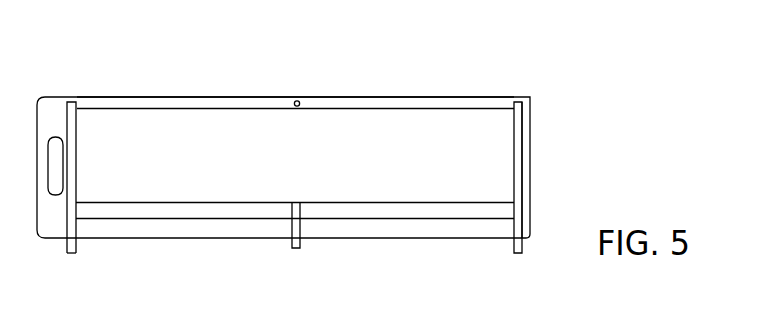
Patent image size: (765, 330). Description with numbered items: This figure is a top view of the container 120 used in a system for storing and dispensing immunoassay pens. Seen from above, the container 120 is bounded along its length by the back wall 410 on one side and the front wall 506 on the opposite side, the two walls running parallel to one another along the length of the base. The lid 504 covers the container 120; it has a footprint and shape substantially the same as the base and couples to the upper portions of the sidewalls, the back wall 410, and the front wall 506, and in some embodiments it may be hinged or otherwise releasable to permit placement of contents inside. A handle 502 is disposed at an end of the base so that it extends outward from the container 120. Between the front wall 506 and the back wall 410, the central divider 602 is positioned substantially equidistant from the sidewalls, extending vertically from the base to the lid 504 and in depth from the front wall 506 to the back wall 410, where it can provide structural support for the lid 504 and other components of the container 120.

The handle 502 is at (44, 101).
The lid 504 is at (203, 115).
The back wall 410 is at (343, 97).
The container 120 is at (512, 168).
The front wall 506 is at (395, 242).
The central divider 602 is at (298, 248).